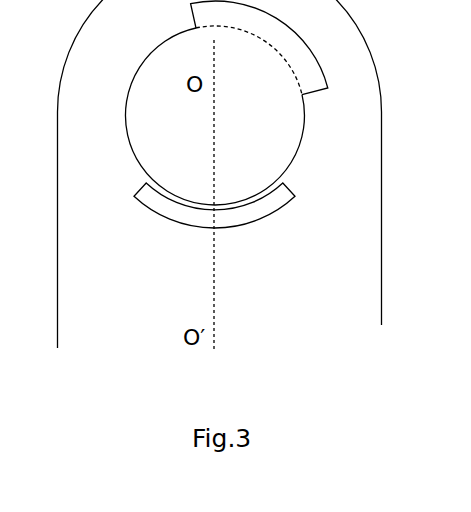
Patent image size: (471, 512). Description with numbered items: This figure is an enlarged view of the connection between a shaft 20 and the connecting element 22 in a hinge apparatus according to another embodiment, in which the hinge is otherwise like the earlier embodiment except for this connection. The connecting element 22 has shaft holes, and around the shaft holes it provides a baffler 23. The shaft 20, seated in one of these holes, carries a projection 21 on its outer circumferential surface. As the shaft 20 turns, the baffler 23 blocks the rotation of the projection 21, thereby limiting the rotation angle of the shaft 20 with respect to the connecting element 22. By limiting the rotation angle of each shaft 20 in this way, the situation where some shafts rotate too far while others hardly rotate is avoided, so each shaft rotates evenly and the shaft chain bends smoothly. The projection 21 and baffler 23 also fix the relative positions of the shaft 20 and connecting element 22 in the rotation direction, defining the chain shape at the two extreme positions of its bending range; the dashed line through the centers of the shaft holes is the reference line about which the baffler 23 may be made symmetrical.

The shaft 20 is at (214, 115).
The projection 21 is at (286, 38).
The connecting element 22 is at (220, 174).
The baffler 23 is at (265, 207).